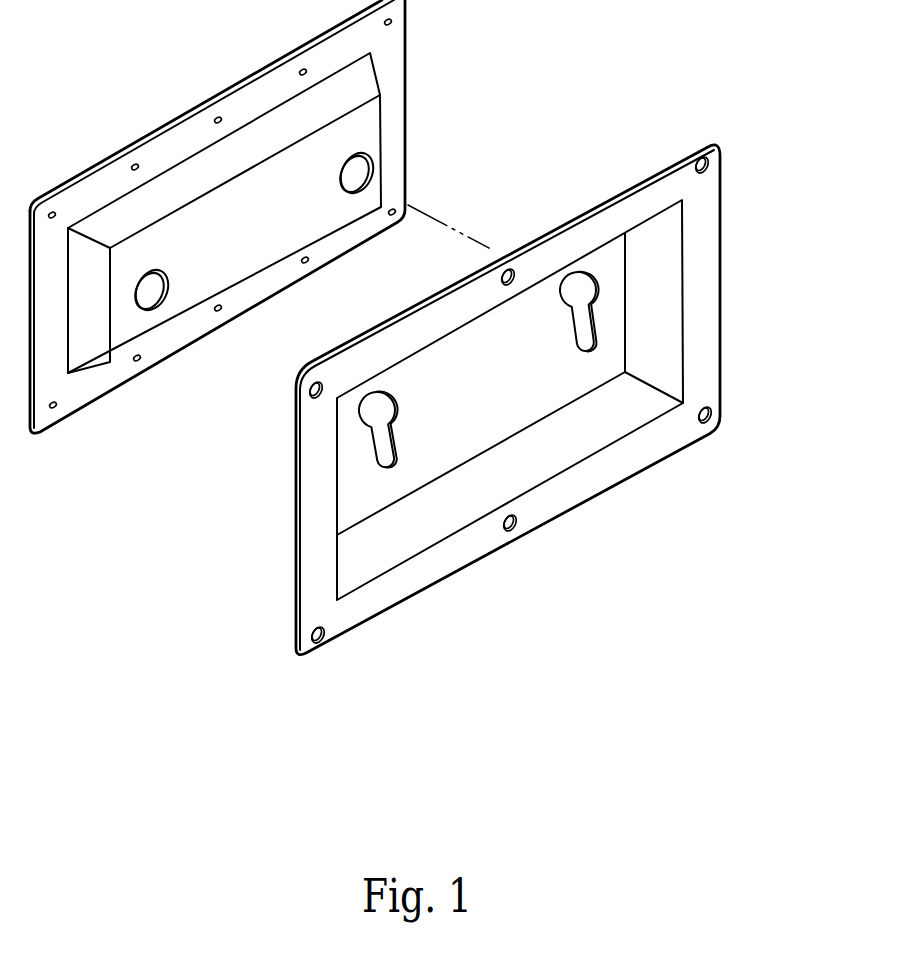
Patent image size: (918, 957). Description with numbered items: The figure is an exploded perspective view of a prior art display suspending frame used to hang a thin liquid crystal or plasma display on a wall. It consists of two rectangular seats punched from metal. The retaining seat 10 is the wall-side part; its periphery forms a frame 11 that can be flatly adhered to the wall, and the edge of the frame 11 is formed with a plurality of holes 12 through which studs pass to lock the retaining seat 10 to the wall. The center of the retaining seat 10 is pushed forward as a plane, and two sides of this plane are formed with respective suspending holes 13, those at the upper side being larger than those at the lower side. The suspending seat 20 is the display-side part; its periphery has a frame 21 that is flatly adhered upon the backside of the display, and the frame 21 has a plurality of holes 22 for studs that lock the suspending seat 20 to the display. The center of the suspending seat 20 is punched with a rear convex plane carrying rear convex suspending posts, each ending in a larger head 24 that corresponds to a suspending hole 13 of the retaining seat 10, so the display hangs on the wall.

The retaining seat 10 is at (531, 411).
The frame 11 is at (418, 337).
The holes 12 is at (708, 168).
The suspending holes 13 is at (372, 410).
The suspending seat 20 is at (249, 229).
The frame 21 is at (48, 288).
The holes 22 is at (56, 216).
The larger head 24 is at (357, 175).